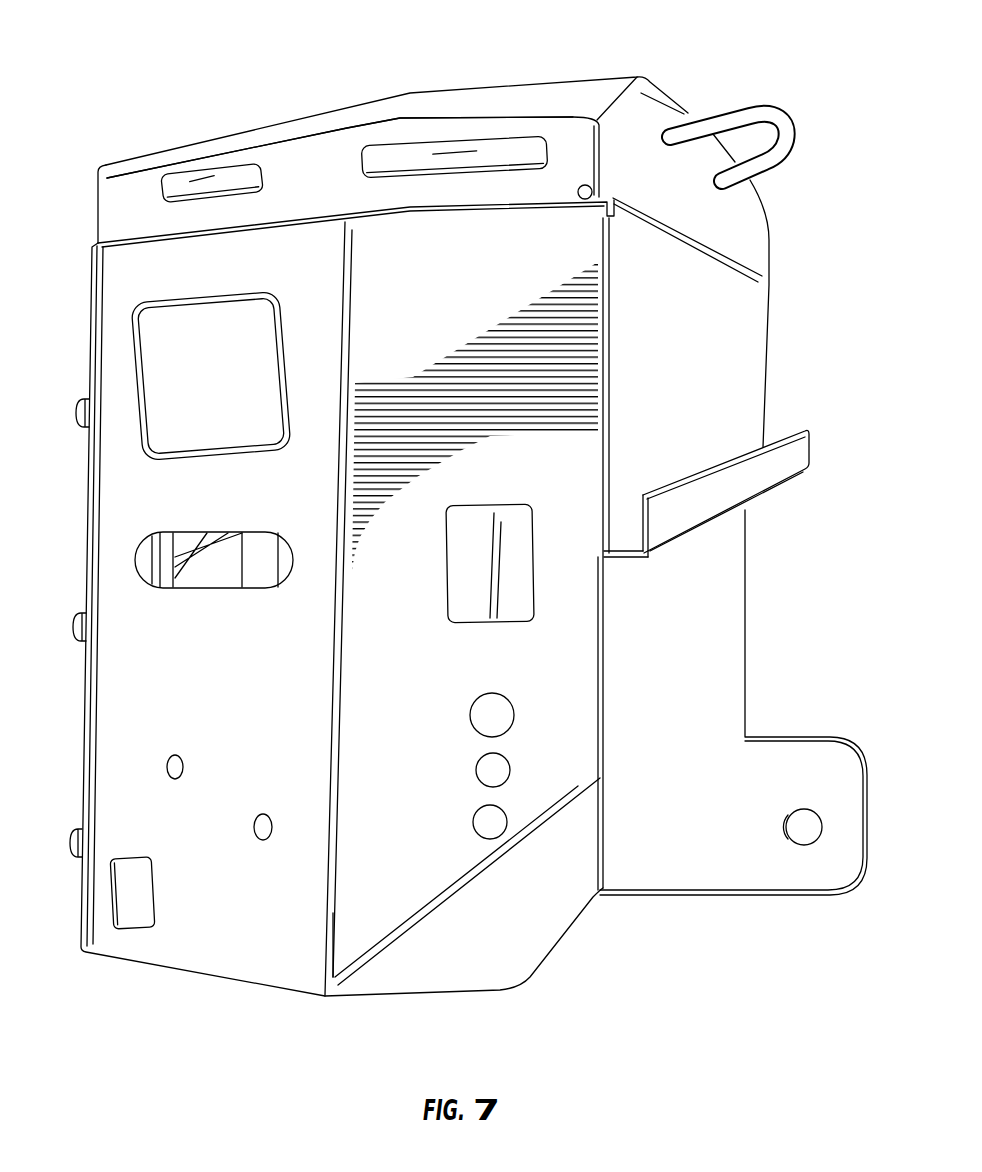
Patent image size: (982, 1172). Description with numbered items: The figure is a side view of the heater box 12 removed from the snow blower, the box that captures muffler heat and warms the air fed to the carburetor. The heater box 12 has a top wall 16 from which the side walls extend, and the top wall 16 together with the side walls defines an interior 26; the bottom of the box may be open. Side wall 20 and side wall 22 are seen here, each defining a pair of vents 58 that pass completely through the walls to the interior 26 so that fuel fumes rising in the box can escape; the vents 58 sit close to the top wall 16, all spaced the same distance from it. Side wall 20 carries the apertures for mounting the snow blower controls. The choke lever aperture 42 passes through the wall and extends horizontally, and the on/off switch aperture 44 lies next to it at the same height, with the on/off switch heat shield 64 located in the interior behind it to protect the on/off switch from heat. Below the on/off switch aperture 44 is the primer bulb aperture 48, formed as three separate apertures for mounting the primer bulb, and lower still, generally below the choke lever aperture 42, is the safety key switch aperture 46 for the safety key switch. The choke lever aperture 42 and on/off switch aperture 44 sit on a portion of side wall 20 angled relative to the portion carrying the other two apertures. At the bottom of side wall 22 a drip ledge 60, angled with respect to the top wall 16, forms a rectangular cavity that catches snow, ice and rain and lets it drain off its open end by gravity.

The heater box 12 is at (297, 160).
The top wall 16 is at (500, 97).
The vents 58 is at (208, 193).
The side wall 20 is at (402, 667).
The on/off switch aperture 44 is at (447, 587).
The on/off switch heat shield 64 is at (529, 567).
The primer bulb aperture 48 is at (477, 768).
The choke lever aperture 42 is at (242, 557).
The safety key switch aperture 46 is at (135, 895).
The side wall 22 is at (733, 373).
The drip ledge 60 is at (724, 504).
The interior 26 is at (669, 582).